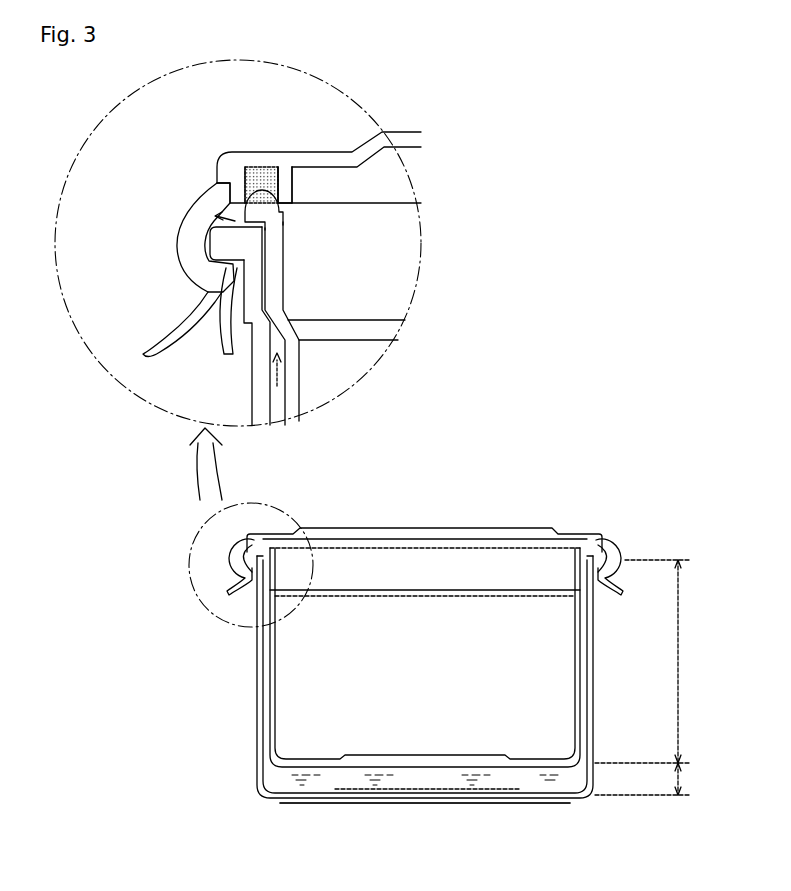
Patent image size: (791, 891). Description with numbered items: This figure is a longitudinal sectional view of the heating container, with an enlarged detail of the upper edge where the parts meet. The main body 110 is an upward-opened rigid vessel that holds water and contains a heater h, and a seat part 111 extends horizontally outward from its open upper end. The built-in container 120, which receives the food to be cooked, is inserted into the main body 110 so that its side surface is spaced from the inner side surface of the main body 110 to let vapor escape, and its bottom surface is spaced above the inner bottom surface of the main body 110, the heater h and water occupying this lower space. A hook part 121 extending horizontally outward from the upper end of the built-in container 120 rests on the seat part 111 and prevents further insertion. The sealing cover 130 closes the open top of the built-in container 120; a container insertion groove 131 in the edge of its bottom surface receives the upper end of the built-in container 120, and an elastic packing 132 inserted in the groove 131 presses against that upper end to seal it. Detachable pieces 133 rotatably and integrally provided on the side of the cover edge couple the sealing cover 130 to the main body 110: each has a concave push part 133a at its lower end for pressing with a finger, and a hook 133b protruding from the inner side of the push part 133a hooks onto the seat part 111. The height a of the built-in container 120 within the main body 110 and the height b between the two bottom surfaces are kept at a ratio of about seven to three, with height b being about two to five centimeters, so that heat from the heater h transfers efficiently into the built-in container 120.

The main body 110 is at (273, 423).
The seat part 111 is at (210, 230).
The built-in container 120 is at (297, 400).
The hook part 121 is at (250, 190).
The sealing cover 130 is at (342, 153).
The container insertion groove 131 is at (284, 170).
The packing 132 is at (262, 170).
The detachable piece 133 is at (170, 256).
The push part 133a is at (180, 320).
The hook 133b is at (229, 275).
The height of the built-in container within the main body a is at (646, 661).
The height between the bottom surfaces b is at (646, 779).
The heater h is at (422, 797).